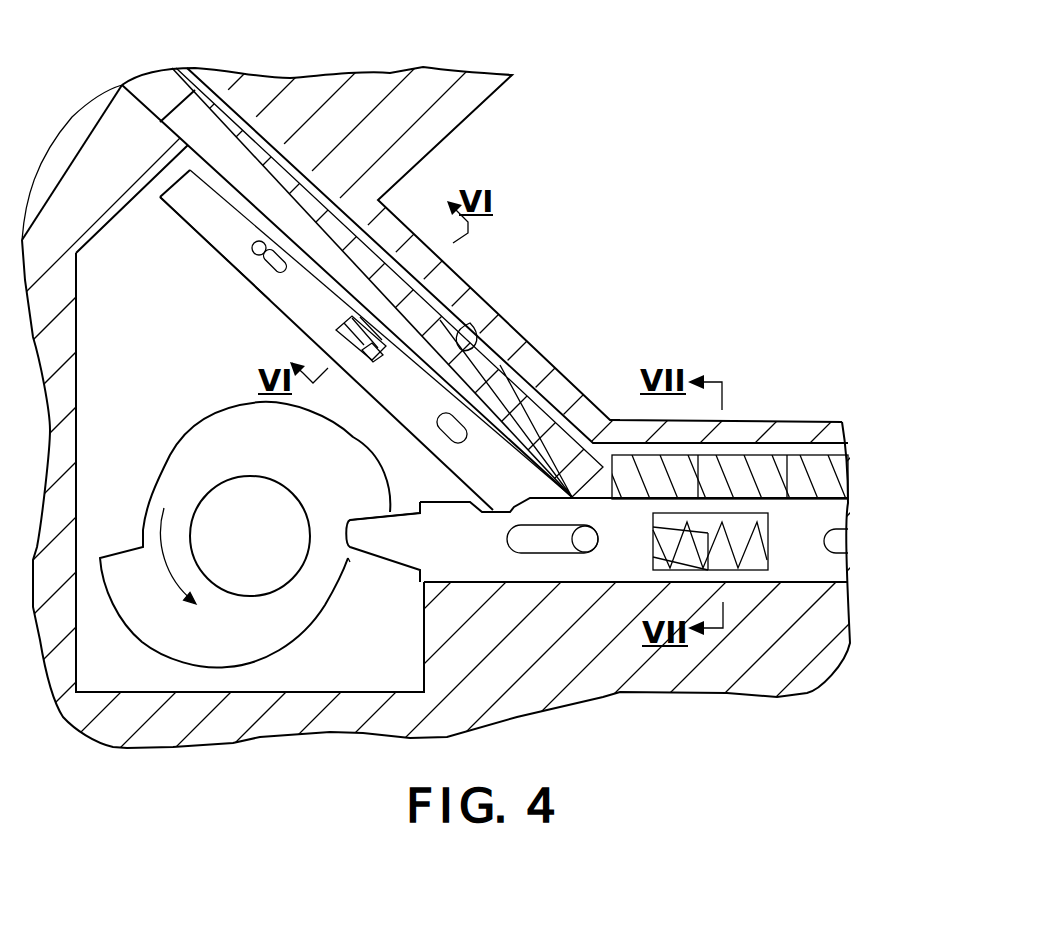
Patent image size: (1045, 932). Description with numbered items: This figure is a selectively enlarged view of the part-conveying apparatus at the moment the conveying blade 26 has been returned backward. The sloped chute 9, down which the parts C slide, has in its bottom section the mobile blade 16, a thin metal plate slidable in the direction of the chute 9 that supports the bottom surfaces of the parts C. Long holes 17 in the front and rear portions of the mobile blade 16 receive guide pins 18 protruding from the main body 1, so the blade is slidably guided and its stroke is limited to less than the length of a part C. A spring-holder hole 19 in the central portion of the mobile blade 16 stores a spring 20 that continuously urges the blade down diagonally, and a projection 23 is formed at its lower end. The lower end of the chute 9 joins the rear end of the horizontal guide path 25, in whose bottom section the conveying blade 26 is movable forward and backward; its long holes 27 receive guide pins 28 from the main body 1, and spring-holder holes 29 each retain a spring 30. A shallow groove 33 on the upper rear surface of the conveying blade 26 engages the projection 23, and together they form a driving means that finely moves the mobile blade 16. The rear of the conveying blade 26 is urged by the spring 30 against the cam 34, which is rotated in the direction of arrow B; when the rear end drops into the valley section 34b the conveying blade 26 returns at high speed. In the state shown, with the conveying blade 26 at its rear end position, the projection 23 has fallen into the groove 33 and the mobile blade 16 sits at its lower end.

The main body 1 is at (381, 87).
The part C is at (207, 105).
The chute 9 is at (498, 342).
The mobile blade 16 is at (203, 227).
The long hole 17 is at (250, 282).
The guide pin 18 is at (253, 260).
The spring-holder hole 19 is at (365, 358).
The spring 20 is at (336, 325).
The projection 23 is at (502, 512).
The horizontal guide path 25 is at (723, 443).
The conveying blade 26 is at (628, 570).
The long hole 27 is at (536, 545).
The guide pin 28 is at (583, 552).
The spring-holder hole 29 is at (732, 562).
The spring 30 is at (760, 560).
The shallow groove 33 is at (487, 545).
The cam 34 is at (187, 447).
The valley section 34b is at (347, 562).
The arrow B is at (165, 556).